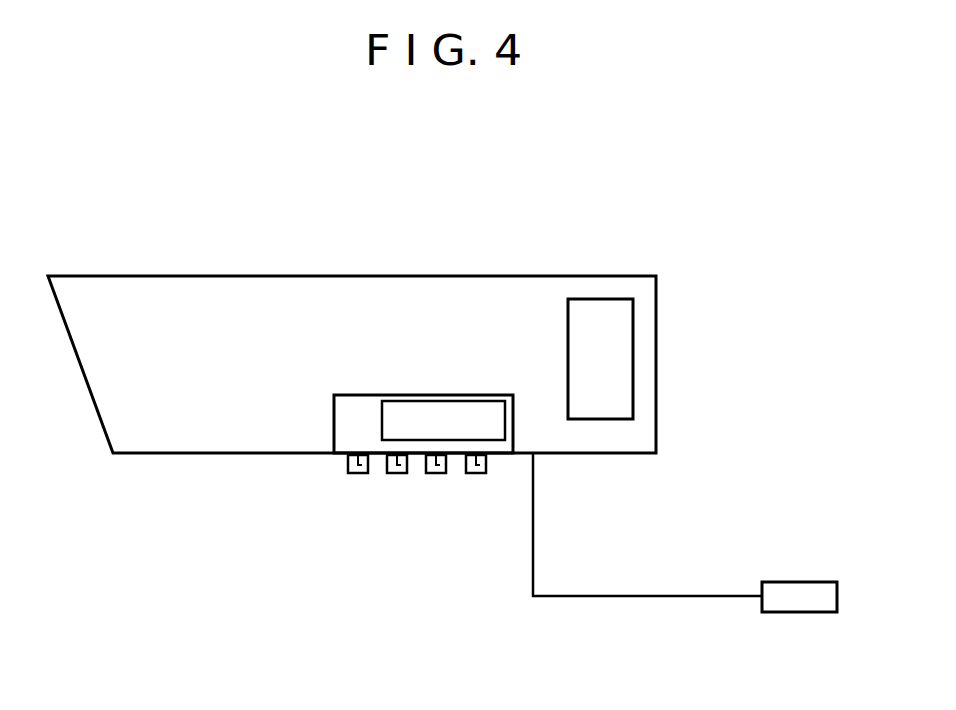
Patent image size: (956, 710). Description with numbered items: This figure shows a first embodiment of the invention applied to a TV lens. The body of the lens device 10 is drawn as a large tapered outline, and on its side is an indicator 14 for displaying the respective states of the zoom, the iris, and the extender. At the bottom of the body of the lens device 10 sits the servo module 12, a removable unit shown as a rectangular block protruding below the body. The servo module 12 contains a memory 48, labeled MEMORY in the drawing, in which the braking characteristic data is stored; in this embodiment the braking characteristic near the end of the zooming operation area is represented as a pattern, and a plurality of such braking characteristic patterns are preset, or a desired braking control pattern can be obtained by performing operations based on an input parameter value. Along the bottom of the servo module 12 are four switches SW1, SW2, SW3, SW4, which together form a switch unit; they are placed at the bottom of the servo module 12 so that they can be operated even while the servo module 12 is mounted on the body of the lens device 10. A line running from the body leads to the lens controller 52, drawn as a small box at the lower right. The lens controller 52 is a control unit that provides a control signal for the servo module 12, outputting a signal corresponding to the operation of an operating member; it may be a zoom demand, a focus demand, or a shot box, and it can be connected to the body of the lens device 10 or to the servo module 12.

The lens device 10 is at (237, 297).
The servo module 12 is at (365, 402).
The indicator 14 is at (597, 325).
The memory 48 is at (398, 400).
The lens controller 52 is at (793, 594).
The switch SW1 is at (357, 473).
The switch SW2 is at (395, 473).
The switch SW3 is at (432, 473).
The switch SW4 is at (472, 473).